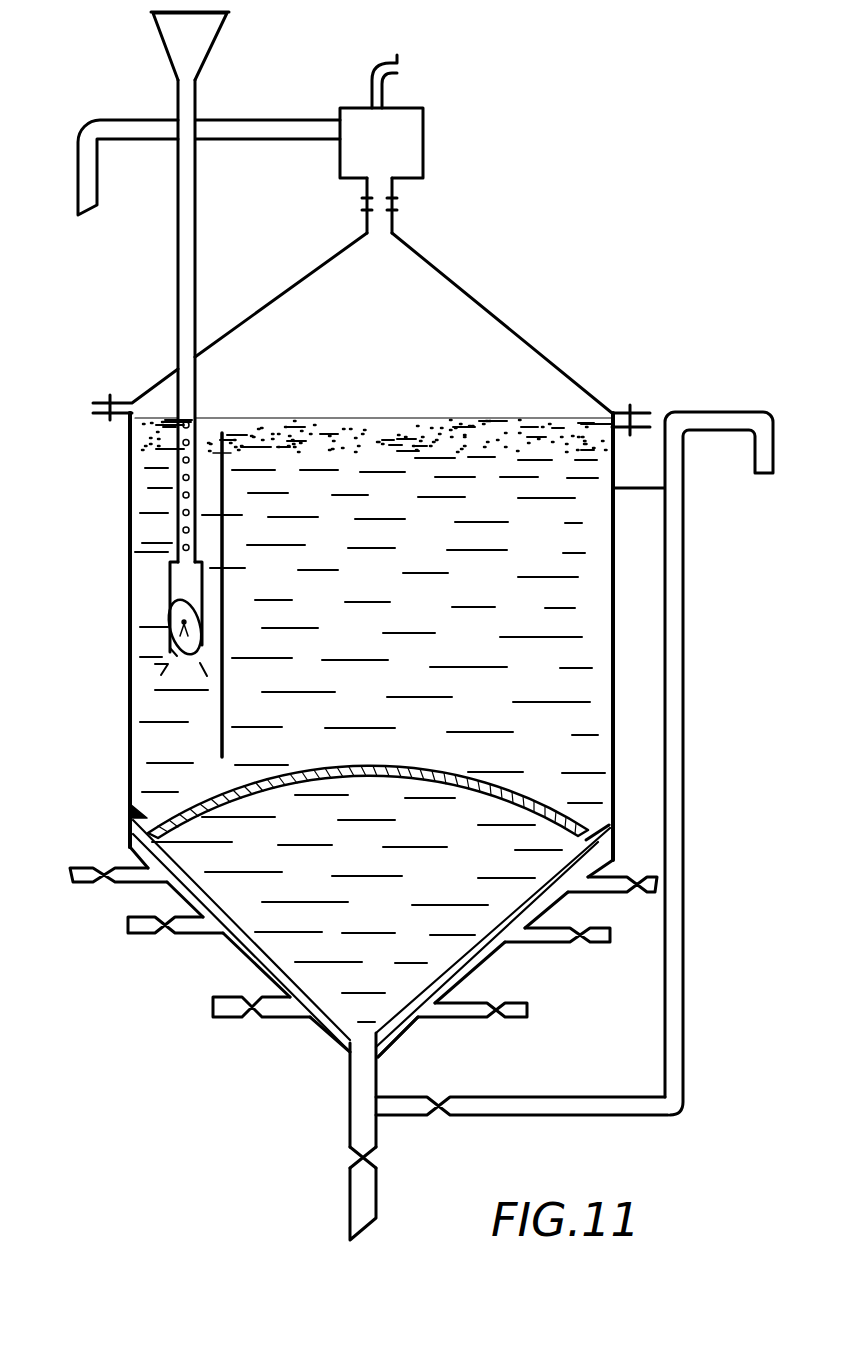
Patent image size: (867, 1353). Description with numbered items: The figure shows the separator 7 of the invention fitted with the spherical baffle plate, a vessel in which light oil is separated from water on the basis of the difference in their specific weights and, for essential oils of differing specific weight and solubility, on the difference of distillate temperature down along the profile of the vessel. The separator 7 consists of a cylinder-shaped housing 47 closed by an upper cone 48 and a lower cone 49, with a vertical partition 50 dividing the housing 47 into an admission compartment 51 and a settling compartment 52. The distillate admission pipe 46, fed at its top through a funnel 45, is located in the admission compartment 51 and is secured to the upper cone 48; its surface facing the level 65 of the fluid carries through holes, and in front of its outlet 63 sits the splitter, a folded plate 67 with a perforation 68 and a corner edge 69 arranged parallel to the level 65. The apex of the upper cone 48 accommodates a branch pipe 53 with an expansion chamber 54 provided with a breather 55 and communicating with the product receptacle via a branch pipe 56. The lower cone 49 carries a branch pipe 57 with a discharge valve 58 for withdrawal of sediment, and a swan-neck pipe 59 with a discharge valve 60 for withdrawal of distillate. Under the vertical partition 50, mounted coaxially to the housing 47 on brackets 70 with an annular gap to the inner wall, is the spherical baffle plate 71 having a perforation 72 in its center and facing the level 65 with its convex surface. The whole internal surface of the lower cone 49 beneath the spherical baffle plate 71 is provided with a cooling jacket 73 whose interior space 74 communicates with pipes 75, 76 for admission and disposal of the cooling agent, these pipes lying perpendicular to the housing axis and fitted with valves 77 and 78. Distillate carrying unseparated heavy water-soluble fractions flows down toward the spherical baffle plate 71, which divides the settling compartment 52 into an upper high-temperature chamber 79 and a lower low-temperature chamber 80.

The separator 7 is at (128, 478).
The funnel 45 is at (208, 55).
The distillate admission pipe 46 is at (178, 218).
The cylinder-shaped housing 47 is at (130, 707).
The upper cone 48 is at (155, 385).
The lower cone 49 is at (308, 1030).
The vertical partition 50 is at (224, 590).
The admission compartment 51 is at (170, 552).
The settling compartment 52 is at (592, 601).
The branch pipe 53 is at (383, 238).
The expansion chamber 54 is at (423, 145).
The breather 55 is at (382, 60).
The branch pipe 56 is at (125, 120).
The branch pipe 57 is at (362, 1190).
The discharge valve 58 is at (368, 1157).
The swan-neck pipe 59 is at (550, 1115).
The discharge valve 60 is at (440, 1108).
The outlet 63 is at (172, 620).
The level of the fluid 65 is at (325, 417).
The plate 67 is at (155, 666).
The perforation 68 is at (172, 652).
The corner edge 69 is at (600, 835).
The brackets 70 is at (128, 808).
The spherical baffle plate 71 is at (528, 795).
The perforation 72 is at (420, 768).
The cooling jacket 73 is at (340, 1055).
The interior space 74 is at (327, 1040).
The pipe 75 is at (130, 920).
The pipe 76 is at (572, 963).
The valve 77 is at (103, 868).
The valve 78 is at (637, 877).
The upper high-temperature chamber 79 is at (390, 432).
The lower low-temperature chamber 80 is at (385, 977).